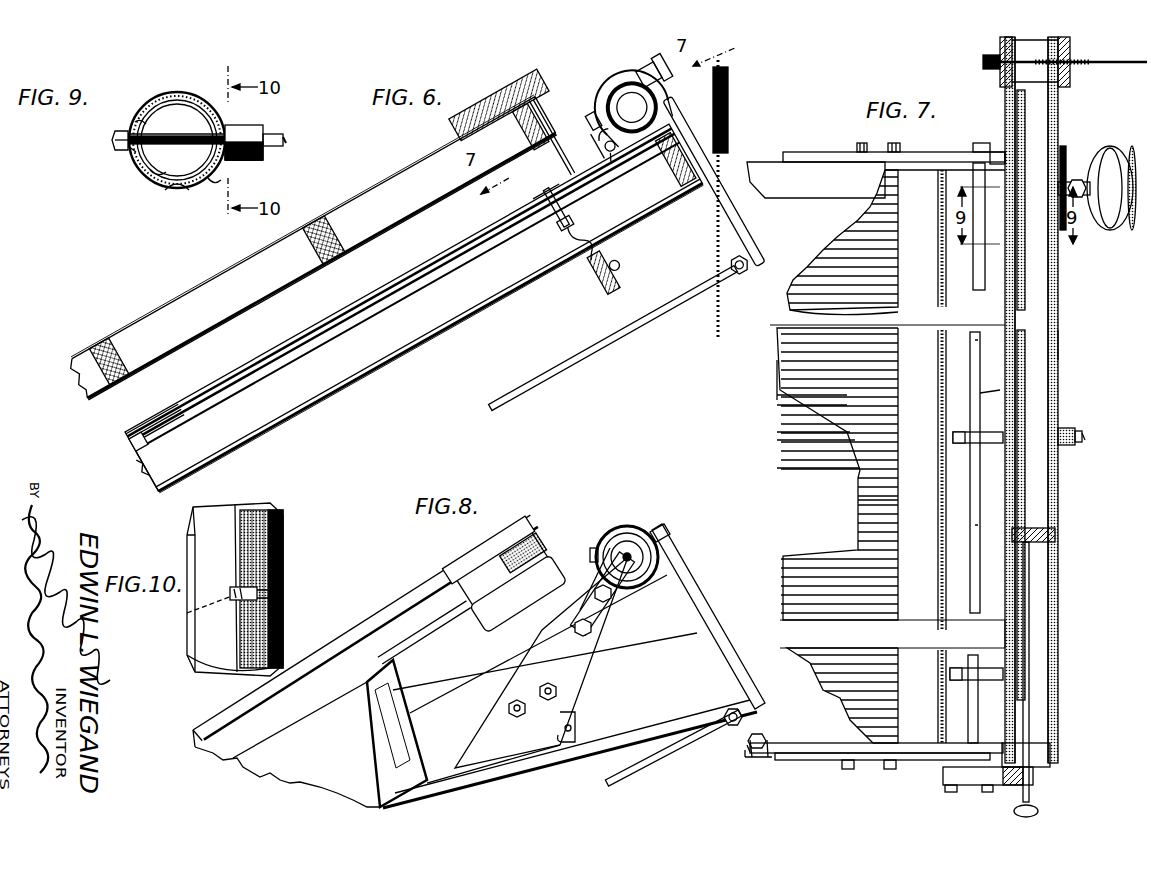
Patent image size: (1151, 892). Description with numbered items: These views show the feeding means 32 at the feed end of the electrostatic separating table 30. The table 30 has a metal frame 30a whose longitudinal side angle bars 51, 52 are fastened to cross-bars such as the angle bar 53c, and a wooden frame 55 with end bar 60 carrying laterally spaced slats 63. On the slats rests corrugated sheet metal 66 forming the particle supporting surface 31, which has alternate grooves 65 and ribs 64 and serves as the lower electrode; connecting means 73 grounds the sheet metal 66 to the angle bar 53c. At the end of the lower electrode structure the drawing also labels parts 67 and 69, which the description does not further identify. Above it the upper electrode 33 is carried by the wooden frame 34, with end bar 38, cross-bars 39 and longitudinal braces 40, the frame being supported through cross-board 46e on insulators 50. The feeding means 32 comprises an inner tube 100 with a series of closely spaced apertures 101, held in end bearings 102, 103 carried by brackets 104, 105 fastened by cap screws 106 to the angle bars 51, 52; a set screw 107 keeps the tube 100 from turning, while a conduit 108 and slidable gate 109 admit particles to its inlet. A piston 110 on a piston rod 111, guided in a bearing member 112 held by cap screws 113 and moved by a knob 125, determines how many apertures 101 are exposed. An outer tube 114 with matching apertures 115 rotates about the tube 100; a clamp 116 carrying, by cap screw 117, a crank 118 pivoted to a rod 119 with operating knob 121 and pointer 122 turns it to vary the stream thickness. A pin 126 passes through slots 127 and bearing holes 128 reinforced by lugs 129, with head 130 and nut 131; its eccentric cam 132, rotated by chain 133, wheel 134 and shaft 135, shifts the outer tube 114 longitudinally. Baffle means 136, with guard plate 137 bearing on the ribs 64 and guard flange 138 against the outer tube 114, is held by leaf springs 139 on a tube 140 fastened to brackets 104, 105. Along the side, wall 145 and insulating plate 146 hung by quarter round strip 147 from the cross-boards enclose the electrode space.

In FIG. 6, the table 30 is at (400, 360).
In FIG. 7, the metal frame 30a is at (748, 752).
In FIG. 8, the metal frame 30a is at (746, 770).
In FIG. 6, the table surface / lower electrode 31 is at (347, 303).
In FIG. 7, the table surface / lower electrode 31 is at (775, 372).
In FIG. 8, the table surface / lower electrode 31 is at (497, 663).
In FIG. 7, the feeding means 32 is at (1062, 358).
In FIG. 8, the feeding means 32 is at (646, 528).
In FIG. 6, the upper electrode 33 is at (292, 290).
In FIG. 8, the upper electrode 33 is at (434, 656).
In FIG. 6, the supporting structure or frame 34 is at (323, 232).
In FIG. 8, the supporting structure or frame 34 is at (353, 632).
In FIG. 6, the transverse end bar 38 is at (516, 140).
In FIG. 6, the cross-bars 39 is at (326, 238).
In FIG. 6, the longitudinal braces 40 is at (401, 190).
In FIG. 6, the cross-board 46e is at (488, 92).
In FIG. 8, the cross-board 46e is at (524, 536).
In FIG. 8, the insulator 50 is at (536, 560).
In FIG. 7, the side bar (angle bar) 51 is at (766, 160).
In FIG. 7, the side bar (angle bar) 52 is at (765, 760).
In FIG. 8, the side bar (angle bar) 52 is at (438, 765).
In FIG. 6, the angle bar / cross-bar 53c is at (576, 292).
In FIG. 8, the angle bar / cross-bar 53c is at (576, 745).
In FIG. 6, the frame 55 is at (338, 384).
In FIG. 6, the end bar 60 is at (668, 166).
In FIG. 7, the slats 63 is at (785, 445).
In FIG. 6, the ribs 64 is at (240, 393).
In FIG. 7, the ribs 64 is at (790, 305).
In FIG. 6, the grooves 65 is at (174, 408).
In FIG. 7, the grooves 65 is at (838, 244).
In FIG. 6, the corrugated sheet metal 66 is at (210, 396).
In FIG. 6, the rail end 67 is at (150, 453).
In FIG. 6, the rail end notch 69 is at (150, 441).
In FIG. 6, the connecting means 73 is at (562, 245).
In FIG. 9, the tube 100 is at (187, 96).
In FIG. 6, the tube 100 is at (631, 107).
In FIG. 7, the tube 100 is at (1060, 102).
In FIG. 10, the tube 100 is at (283, 513).
In FIG. 9, the apertures 101 is at (166, 188).
In FIG. 7, the apertures 101 is at (1028, 188).
In FIG. 7, the tubular end bearing 102 is at (1005, 142).
In FIG. 7, the tubular end bearing 103 is at (1050, 748).
In FIG. 6, the bracket 104 is at (693, 92).
In FIG. 7, the bracket 104 is at (942, 152).
In FIG. 6, the bracket 105 is at (690, 82).
In FIG. 7, the bracket 105 is at (920, 760).
In FIG. 8, the bracket 105 is at (568, 665).
In FIG. 7, the cap screws 106 is at (892, 143).
In FIG. 8, the cap screws 106 is at (548, 700).
In FIG. 7, the set screw 107 is at (1060, 168).
In FIG. 7, the conduit 108 is at (1000, 47).
In FIG. 7, the slidable gate 109 is at (1086, 60).
In FIG. 7, the piston 110 is at (1055, 536).
In FIG. 7, the piston rod 111 is at (1030, 596).
In FIG. 8, the piston rod 111 is at (625, 552).
In FIG. 7, the bearing member 112 is at (1035, 777).
In FIG. 8, the bearing member 112 is at (640, 568).
In FIG. 7, the cap screws 113 is at (985, 792).
In FIG. 8, the cap screws 113 is at (603, 620).
In FIG. 9, the outer tube 114 is at (166, 98).
In FIG. 6, the outer tube 114 is at (640, 78).
In FIG. 7, the outer tube 114 is at (1058, 495).
In FIG. 10, the outer tube 114 is at (283, 546).
In FIG. 9, the apertures 115 is at (178, 190).
In FIG. 6, the clamp 116 is at (620, 76).
In FIG. 7, the clamp 116 is at (1066, 427).
In FIG. 8, the clamp 116 is at (623, 522).
In FIG. 7, the cap screw 117 is at (1083, 440).
In FIG. 8, the cap screw 117 is at (664, 526).
In FIG. 6, the crank 118 is at (722, 208).
In FIG. 7, the crank 118 is at (1079, 432).
In FIG. 8, the crank 118 is at (696, 600).
In FIG. 6, the rod 119 is at (647, 323).
In FIG. 8, the rod 119 is at (658, 770).
In FIG. 9, the operating knob 121 is at (135, 124).
In FIG. 9, the pointer 122 is at (130, 149).
In FIG. 7, the knob 125 is at (1040, 812).
In FIG. 9, the pin 126 is at (150, 170).
In FIG. 10, the pin 126 is at (186, 613).
In FIG. 9, the slots 127 is at (214, 181).
In FIG. 10, the slots 127 is at (258, 592).
In FIG. 9, the bearing holes 128 is at (200, 146).
In FIG. 9, the lugs 129 is at (160, 134).
In FIG. 9, the head 130 is at (252, 127).
In FIG. 9, the nut 131 is at (113, 141).
In FIG. 9, the eccentric cam 132 is at (243, 162).
In FIG. 10, the eccentric cam 132 is at (275, 605).
In FIG. 6, the chain 133 is at (716, 330).
In FIG. 7, the chain 133 is at (1073, 245).
In FIG. 7, the wheel 134 is at (1110, 230).
In FIG. 9, the shaft 135 is at (282, 135).
In FIG. 7, the shaft 135 is at (1102, 152).
In FIG. 6, the baffle or guard means 136 is at (550, 196).
In FIG. 7, the baffle or guard means 136 is at (870, 426).
In FIG. 6, the guard plate 137 is at (542, 201).
In FIG. 7, the guard plate 137 is at (880, 500).
In FIG. 6, the guard flange 138 is at (604, 130).
In FIG. 7, the guard flange 138 is at (975, 393).
In FIG. 6, the leaf springs 139 is at (578, 128).
In FIG. 7, the leaf springs 139 is at (953, 250).
In FIG. 6, the tube 140 is at (596, 150).
In FIG. 7, the tube 140 is at (975, 340).
In FIG. 8, the wall 145 is at (272, 775).
In FIG. 8, the plate 146 is at (232, 757).
In FIG. 8, the quarter round strip 147 is at (222, 734).